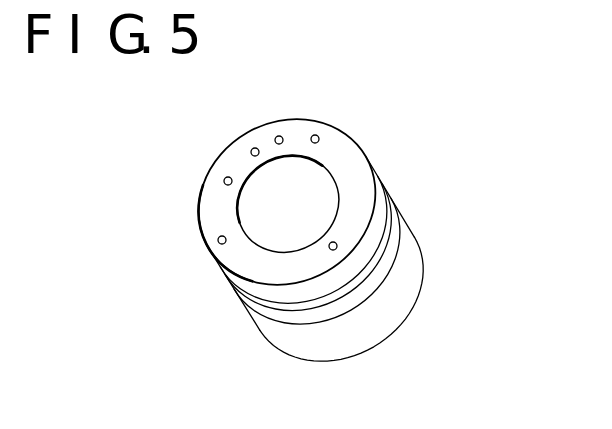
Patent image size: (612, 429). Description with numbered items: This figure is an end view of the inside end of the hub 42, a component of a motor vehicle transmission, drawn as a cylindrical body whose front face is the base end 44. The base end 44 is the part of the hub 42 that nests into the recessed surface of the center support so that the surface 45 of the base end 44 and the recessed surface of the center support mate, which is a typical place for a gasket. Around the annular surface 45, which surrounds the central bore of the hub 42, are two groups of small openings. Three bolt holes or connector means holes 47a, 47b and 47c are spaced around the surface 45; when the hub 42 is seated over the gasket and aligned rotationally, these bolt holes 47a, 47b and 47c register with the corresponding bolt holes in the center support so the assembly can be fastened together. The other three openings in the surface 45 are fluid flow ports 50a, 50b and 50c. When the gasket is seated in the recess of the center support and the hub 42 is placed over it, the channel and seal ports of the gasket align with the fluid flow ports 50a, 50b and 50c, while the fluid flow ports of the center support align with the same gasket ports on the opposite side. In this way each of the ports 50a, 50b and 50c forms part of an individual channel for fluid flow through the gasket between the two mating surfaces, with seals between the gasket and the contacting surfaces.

The hub 42 is at (403, 209).
The base end 44 is at (232, 156).
The surface 45 is at (350, 158).
The bolt hole 47a is at (336, 247).
The bolt hole 47b is at (319, 139).
The bolt hole 47c is at (220, 243).
The fluid flow port 50a is at (283, 137).
The fluid flow port 50b is at (254, 149).
The fluid flow port 50c is at (223, 181).